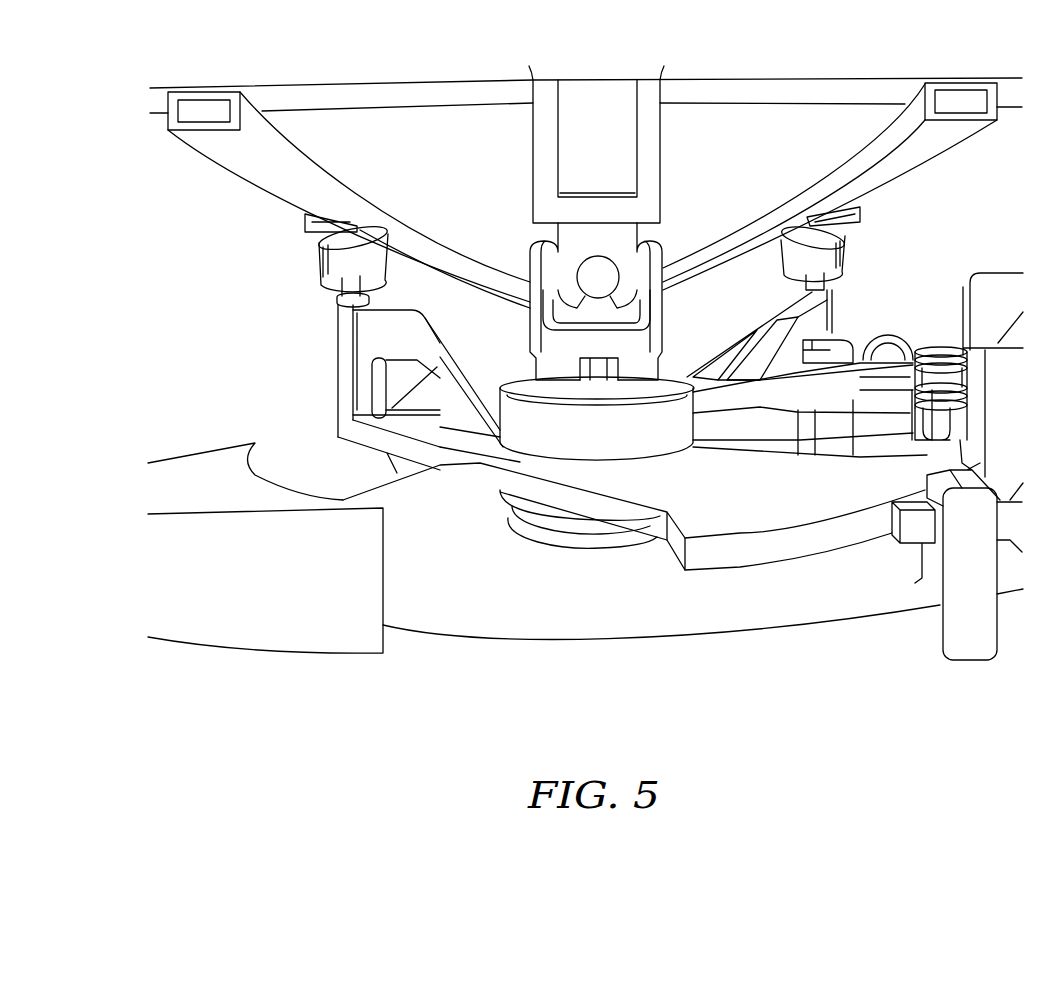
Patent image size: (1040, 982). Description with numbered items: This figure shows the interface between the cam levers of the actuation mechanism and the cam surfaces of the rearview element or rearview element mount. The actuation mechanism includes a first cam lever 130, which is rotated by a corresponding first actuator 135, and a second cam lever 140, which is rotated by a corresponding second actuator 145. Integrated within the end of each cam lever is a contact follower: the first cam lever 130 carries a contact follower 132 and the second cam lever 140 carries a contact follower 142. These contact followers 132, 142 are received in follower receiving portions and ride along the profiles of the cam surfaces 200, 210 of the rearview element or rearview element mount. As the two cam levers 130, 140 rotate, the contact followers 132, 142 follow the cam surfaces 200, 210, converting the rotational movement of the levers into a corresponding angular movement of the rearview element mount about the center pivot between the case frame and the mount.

The first cam lever 130 is at (742, 583).
The contact follower 132 is at (342, 262).
The first actuator 135 is at (918, 532).
The second cam lever 140 is at (743, 353).
The contact follower 142 is at (823, 240).
The second actuator 145 is at (940, 350).
The cam surface 200 is at (243, 165).
The cam surface 210 is at (907, 157).